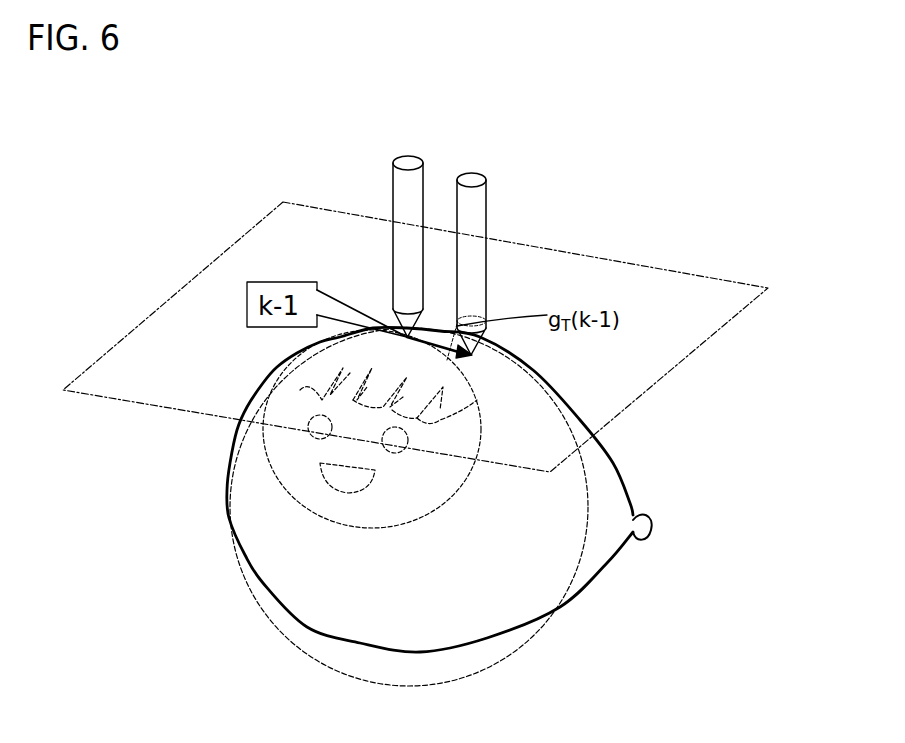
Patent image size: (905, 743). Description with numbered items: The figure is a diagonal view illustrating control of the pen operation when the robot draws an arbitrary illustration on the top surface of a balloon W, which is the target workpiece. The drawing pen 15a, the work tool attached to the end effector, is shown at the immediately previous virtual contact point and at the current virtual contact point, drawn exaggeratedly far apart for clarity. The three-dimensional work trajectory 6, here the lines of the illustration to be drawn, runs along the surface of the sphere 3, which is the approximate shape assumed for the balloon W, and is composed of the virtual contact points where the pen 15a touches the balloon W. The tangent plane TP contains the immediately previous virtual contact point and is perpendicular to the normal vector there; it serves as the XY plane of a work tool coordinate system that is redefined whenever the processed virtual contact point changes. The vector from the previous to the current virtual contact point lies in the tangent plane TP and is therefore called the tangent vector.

The drawing pen 15a is at (478, 175).
The three-dimensional work trajectory 6 is at (267, 450).
The sphere 3 is at (270, 618).
The tangent plane TP is at (182, 290).
The balloon W is at (628, 480).